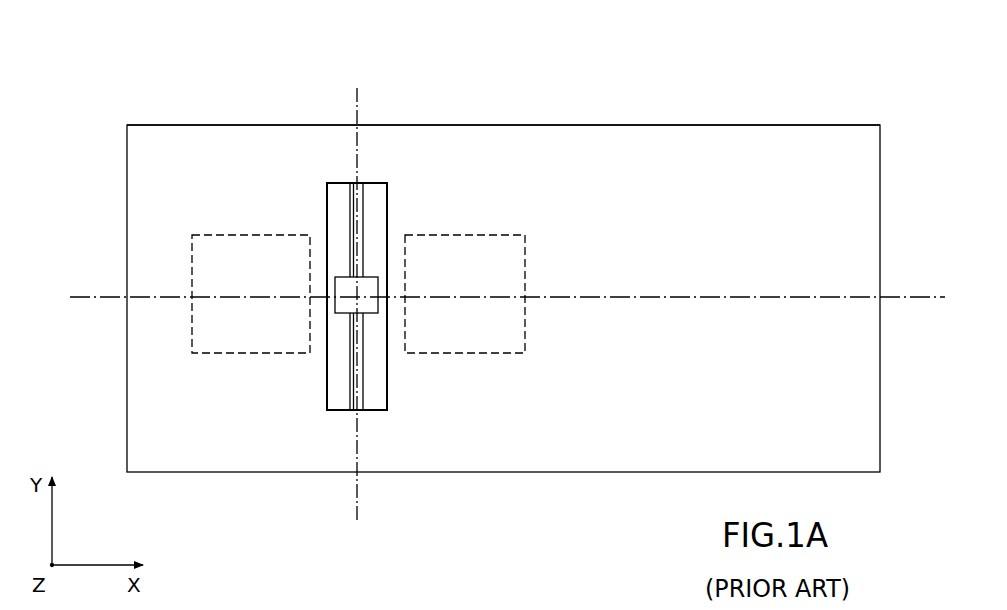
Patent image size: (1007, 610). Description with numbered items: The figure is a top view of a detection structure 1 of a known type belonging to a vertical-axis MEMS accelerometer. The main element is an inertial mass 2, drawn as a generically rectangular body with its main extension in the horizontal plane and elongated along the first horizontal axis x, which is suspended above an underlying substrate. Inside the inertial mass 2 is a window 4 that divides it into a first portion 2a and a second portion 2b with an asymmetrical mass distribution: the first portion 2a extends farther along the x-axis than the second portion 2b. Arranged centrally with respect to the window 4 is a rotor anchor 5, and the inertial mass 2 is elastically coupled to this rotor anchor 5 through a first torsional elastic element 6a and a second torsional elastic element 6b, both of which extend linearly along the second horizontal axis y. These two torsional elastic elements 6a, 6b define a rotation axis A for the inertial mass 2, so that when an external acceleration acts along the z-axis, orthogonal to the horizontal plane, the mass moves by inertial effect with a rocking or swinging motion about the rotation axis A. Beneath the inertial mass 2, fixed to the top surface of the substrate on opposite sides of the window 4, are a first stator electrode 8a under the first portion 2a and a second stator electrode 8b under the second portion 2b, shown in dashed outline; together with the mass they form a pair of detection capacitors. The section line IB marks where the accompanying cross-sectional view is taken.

The detection structure 1 is at (826, 82).
The inertial mass 2 is at (716, 140).
The first portion 2a is at (592, 138).
The second portion 2b is at (221, 142).
The window 4 is at (333, 194).
The rotor anchor 5 is at (370, 276).
The first torsional elastic element 6a is at (362, 213).
The second torsional elastic element 6b is at (352, 390).
The first stator electrode 8a is at (474, 338).
The second stator electrode 8b is at (255, 342).
The rotation axis A is at (358, 109).
The section line IB is at (79, 302).